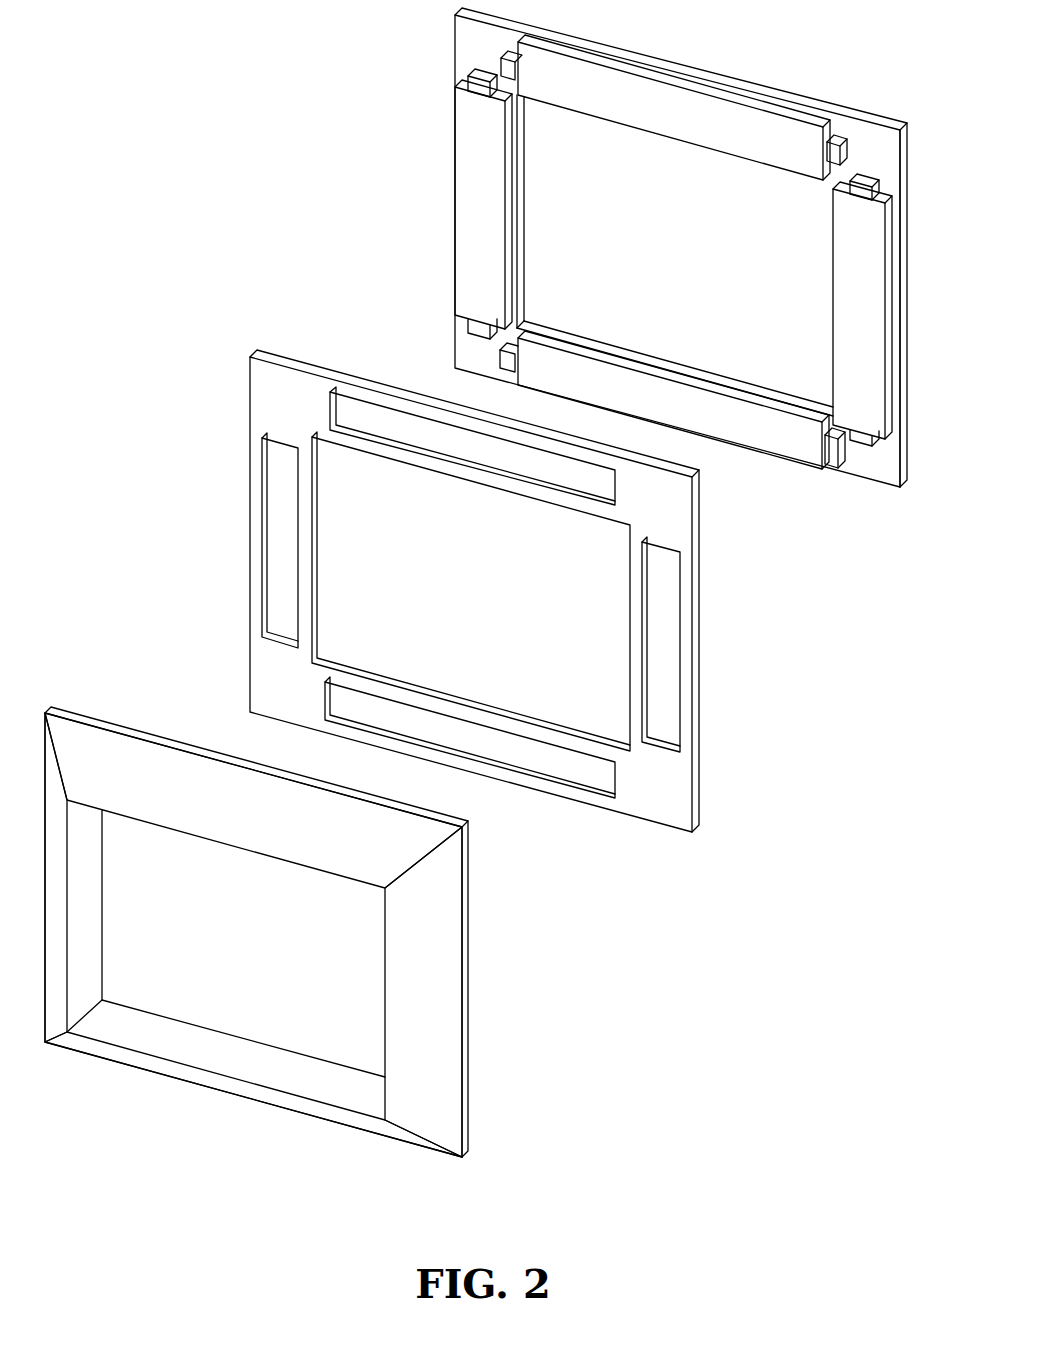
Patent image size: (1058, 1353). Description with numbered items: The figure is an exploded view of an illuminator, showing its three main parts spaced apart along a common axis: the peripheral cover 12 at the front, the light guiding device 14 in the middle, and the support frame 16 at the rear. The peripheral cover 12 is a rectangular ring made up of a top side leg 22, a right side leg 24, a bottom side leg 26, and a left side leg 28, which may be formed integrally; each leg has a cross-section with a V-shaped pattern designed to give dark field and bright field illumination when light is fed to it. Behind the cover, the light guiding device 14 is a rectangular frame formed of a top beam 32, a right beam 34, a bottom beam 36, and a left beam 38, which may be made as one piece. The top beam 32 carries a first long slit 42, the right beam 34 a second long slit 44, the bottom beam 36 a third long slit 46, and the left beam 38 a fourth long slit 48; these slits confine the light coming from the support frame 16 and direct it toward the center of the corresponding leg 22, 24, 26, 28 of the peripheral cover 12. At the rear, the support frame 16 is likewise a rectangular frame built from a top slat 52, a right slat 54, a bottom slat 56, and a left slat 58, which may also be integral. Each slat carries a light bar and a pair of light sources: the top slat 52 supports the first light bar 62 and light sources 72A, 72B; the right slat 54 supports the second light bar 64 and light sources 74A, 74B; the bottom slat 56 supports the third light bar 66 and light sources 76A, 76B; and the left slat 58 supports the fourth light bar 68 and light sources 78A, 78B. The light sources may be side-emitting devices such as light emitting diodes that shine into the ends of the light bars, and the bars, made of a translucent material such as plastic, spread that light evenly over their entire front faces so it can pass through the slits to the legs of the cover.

The peripheral cover 12 is at (478, 982).
The light guiding device 14 is at (706, 615).
The support frame 16 is at (450, 125).
The top side leg 22 is at (262, 822).
The right side leg 24 is at (412, 986).
The bottom side leg 26 is at (226, 1053).
The left side leg 28 is at (92, 910).
The top beam 32 is at (478, 492).
The right beam 34 is at (620, 627).
The bottom beam 36 is at (458, 700).
The left beam 38 is at (318, 567).
The first long slit 42 is at (375, 422).
The second long slit 44 is at (680, 686).
The third long slit 46 is at (540, 757).
The fourth long slit 48 is at (280, 514).
The top slat 52 is at (712, 75).
The right slat 54 is at (905, 380).
The bottom slat 56 is at (745, 396).
The left slat 58 is at (526, 160).
The first light bar 62 is at (668, 120).
The second light bar 64 is at (838, 262).
The third light bar 66 is at (608, 382).
The fourth light bar 68 is at (490, 218).
The light source 72A is at (506, 60).
The light source 72B is at (838, 147).
The light source 74A is at (863, 192).
The light source 74B is at (862, 434).
The light source 76A is at (830, 458).
The light source 76B is at (505, 358).
The light source 78A is at (480, 326).
The light source 78B is at (470, 84).